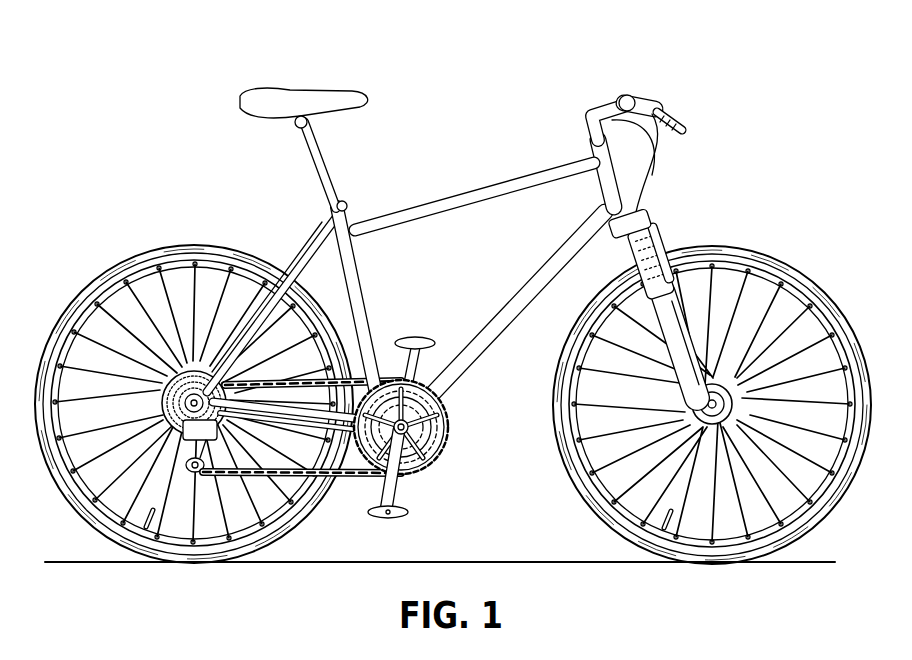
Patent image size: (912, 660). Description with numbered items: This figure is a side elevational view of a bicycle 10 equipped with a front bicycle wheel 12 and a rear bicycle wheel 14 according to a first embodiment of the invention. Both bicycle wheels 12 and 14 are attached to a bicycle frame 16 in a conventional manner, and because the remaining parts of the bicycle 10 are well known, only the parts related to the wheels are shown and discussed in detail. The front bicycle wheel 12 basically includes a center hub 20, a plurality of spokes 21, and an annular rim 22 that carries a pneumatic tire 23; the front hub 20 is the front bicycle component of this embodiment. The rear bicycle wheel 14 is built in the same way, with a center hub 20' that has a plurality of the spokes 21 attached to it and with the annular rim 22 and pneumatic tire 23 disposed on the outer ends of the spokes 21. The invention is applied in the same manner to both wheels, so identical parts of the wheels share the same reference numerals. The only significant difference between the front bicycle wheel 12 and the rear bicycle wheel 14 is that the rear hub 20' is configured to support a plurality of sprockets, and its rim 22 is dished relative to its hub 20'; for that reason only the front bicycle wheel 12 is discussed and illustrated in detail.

The bicycle 10 is at (646, 50).
The front bicycle wheel 12 is at (795, 262).
The rear bicycle wheel 14 is at (118, 256).
The bicycle frame 16 is at (438, 192).
The center hub 20 is at (635, 443).
The center hub 20' is at (124, 437).
The spokes 21 is at (123, 322).
The annular rim 22 is at (52, 372).
The pneumatic tire 23 is at (220, 244).